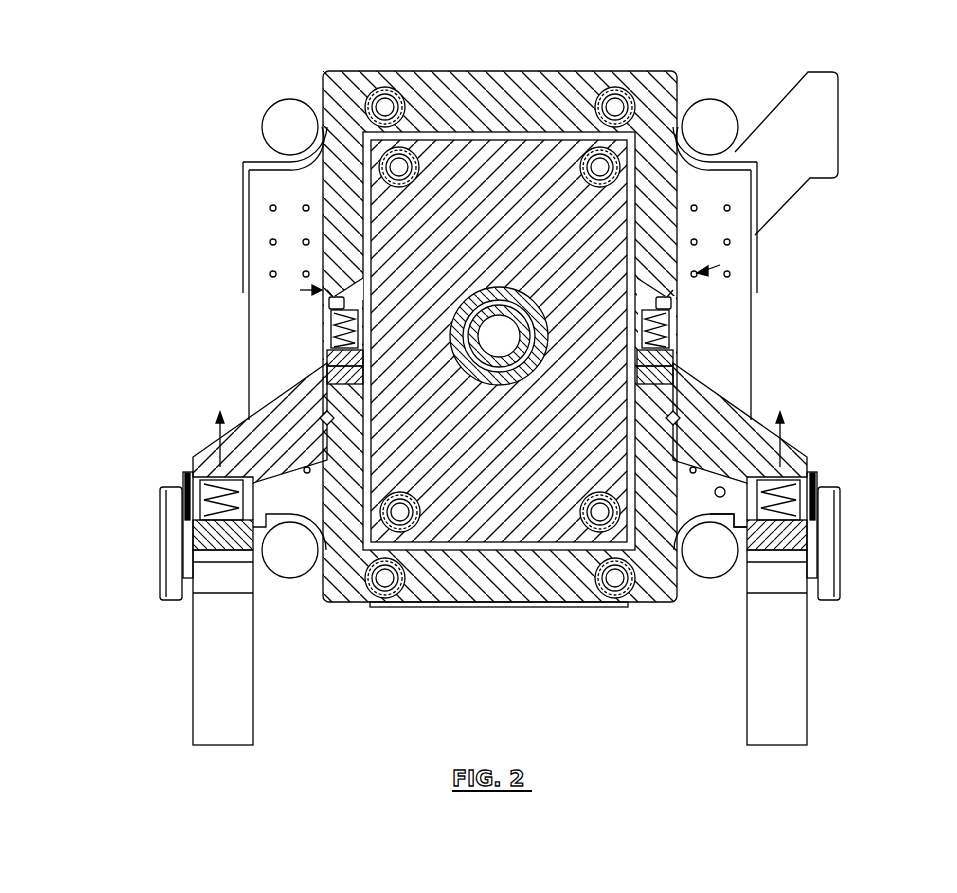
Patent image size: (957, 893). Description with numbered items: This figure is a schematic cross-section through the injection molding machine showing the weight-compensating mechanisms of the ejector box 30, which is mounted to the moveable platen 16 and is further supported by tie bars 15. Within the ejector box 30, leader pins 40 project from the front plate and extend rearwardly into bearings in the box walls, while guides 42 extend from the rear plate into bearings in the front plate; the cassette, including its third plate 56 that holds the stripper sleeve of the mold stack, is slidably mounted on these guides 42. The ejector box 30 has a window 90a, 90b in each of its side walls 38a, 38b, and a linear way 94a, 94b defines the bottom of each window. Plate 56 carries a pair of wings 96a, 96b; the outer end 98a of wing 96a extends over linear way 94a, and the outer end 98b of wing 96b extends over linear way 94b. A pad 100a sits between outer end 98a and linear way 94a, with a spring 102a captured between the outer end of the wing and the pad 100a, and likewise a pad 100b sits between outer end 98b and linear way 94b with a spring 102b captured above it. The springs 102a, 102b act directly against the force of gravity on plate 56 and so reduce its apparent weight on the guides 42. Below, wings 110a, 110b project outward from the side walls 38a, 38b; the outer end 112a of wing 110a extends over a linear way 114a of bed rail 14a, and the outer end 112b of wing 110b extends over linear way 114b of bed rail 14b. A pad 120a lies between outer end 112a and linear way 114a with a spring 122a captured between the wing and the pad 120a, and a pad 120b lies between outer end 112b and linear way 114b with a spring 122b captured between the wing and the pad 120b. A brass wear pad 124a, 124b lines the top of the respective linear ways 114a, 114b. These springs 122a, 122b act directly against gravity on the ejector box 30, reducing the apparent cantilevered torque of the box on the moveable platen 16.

The bed rail 14a is at (253, 680).
The bed rail 14b is at (807, 657).
The tie bars 15 is at (708, 572).
The moveable platen 16 is at (243, 183).
The ejector box 30 is at (518, 63).
The side wall 38a is at (323, 98).
The side wall 38b is at (677, 92).
The leader pins 40 is at (610, 583).
The guides 42 is at (582, 145).
The third plate 56 is at (506, 249).
The window 90a is at (300, 290).
The window 90b is at (720, 265).
The linear way 94a is at (327, 372).
The linear way 94b is at (673, 375).
The wing 96a is at (333, 297).
The wing 96b is at (652, 297).
The outer end 98a is at (327, 303).
The outer end 98b is at (673, 303).
The pad 100a is at (327, 350).
The pad 100b is at (673, 353).
The spring 102a is at (327, 322).
The spring 102b is at (673, 320).
The wing 110a is at (217, 433).
The wing 110b is at (753, 413).
The outer end 112a is at (193, 458).
The outer end 112b is at (807, 452).
The linear way 114a is at (188, 582).
The linear way 114b is at (818, 575).
The pad 120a is at (187, 537).
The pad 120b is at (818, 522).
The spring 122a is at (247, 497).
The spring 122b is at (797, 490).
The brass wear pad 124a is at (253, 557).
The brass wear pad 124b is at (818, 547).